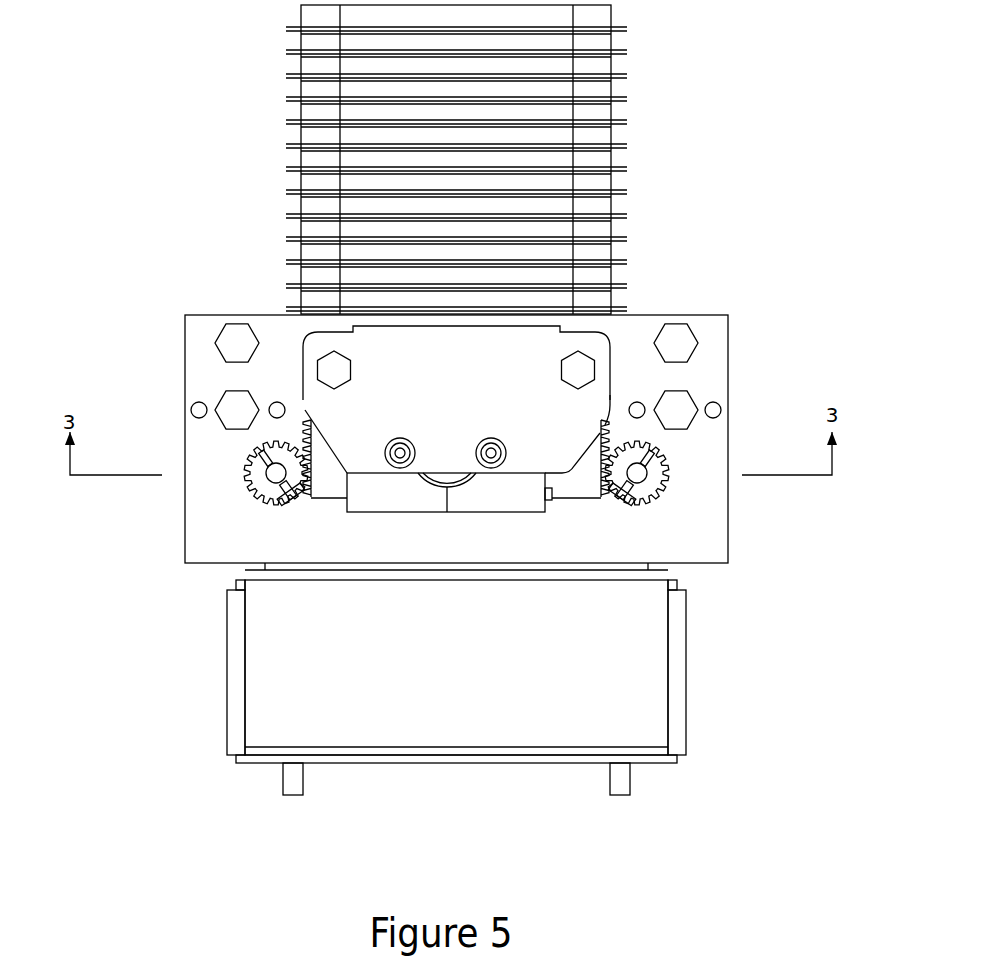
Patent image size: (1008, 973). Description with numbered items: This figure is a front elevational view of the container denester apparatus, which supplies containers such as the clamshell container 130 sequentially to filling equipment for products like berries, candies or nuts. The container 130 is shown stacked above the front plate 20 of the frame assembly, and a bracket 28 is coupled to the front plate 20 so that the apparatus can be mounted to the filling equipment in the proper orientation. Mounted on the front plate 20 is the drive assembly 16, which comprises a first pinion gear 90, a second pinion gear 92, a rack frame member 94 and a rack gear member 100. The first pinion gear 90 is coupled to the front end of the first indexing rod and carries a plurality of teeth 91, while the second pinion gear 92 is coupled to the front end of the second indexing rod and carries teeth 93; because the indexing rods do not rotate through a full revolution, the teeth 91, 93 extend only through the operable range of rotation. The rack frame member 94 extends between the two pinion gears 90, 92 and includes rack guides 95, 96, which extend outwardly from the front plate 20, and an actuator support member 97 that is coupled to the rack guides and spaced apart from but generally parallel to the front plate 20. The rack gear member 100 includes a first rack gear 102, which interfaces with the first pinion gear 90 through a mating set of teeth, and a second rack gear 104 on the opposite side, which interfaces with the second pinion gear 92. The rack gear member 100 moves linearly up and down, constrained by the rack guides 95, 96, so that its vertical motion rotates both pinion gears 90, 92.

The clamshell container 130 is at (623, 162).
The front plate 20 is at (717, 329).
The bracket 28 is at (679, 655).
The rack frame member 94 is at (602, 333).
The rack guide 95 is at (312, 368).
The rack guide 96 is at (596, 352).
The actuator support member 97 is at (607, 390).
The first rack gear 102 is at (302, 433).
The second rack gear 104 is at (608, 432).
The rack gear member 100 is at (593, 503).
The drive assembly 16 is at (212, 470).
The teeth 91 is at (250, 448).
The first pinion gear 90 is at (247, 493).
The second pinion gear 92 is at (680, 467).
The teeth 93 is at (668, 452).